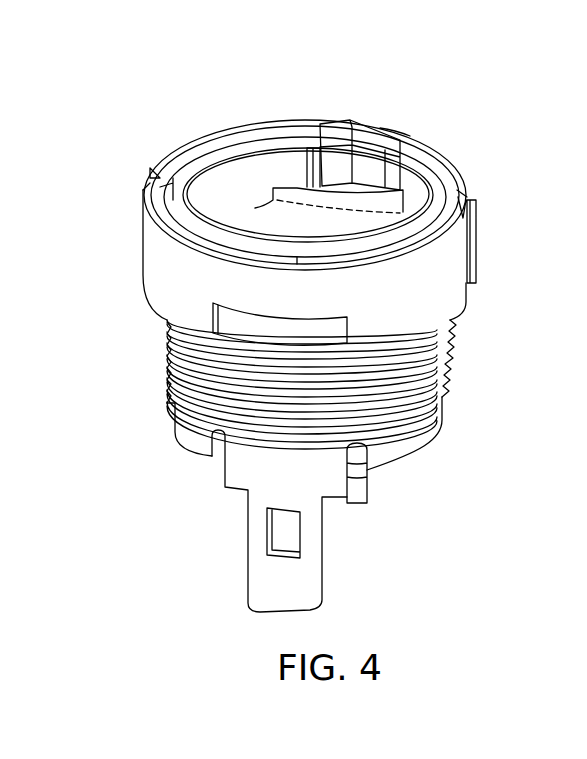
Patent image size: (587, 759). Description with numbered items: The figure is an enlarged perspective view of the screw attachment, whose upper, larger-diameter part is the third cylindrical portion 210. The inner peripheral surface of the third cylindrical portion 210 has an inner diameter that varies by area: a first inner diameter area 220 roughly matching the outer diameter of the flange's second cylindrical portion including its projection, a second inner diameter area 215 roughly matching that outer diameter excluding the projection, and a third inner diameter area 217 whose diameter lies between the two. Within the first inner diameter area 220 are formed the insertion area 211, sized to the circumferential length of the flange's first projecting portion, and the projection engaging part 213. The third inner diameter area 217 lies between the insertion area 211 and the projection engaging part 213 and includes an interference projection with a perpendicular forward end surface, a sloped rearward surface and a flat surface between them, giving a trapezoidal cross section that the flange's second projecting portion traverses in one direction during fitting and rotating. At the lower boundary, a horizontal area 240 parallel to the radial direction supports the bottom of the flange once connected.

The third cylindrical portion 210 is at (351, 322).
The insertion area 211 is at (437, 183).
The projection engaging part 213 is at (327, 183).
The second inner diameter area 215 is at (220, 150).
The third inner diameter area 217 is at (367, 127).
The first inner diameter area 220 is at (404, 127).
The horizontal area 240 is at (295, 210).